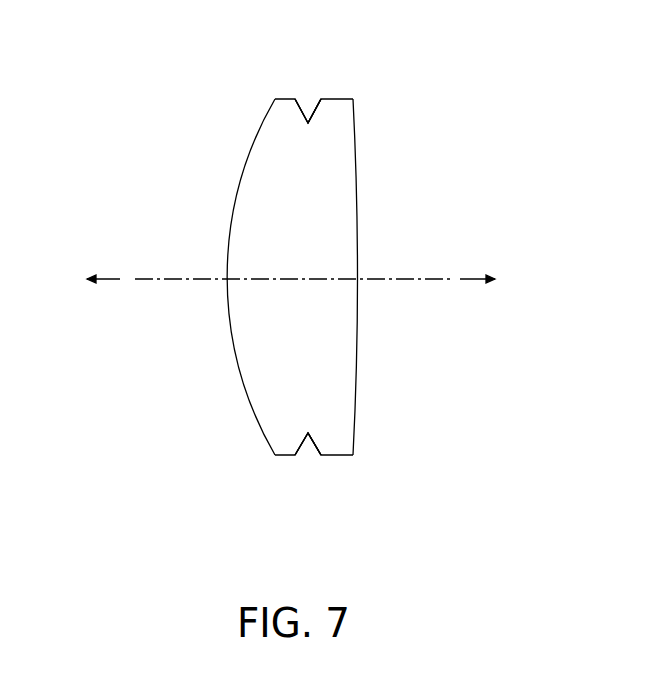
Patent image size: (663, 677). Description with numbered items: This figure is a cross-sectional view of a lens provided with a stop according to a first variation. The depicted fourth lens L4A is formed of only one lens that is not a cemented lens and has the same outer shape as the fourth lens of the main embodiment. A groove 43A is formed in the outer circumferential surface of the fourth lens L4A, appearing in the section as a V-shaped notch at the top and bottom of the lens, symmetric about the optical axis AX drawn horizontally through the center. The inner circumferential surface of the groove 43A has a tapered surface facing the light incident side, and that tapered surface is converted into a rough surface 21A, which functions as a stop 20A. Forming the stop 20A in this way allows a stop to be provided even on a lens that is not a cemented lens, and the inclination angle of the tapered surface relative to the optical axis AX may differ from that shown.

The fourth lens L4A is at (170, 122).
The rough surface 21A is at (300, 108).
The stop 20A is at (288, 279).
The groove 43A is at (314, 103).
The optical axis AX is at (155, 278).